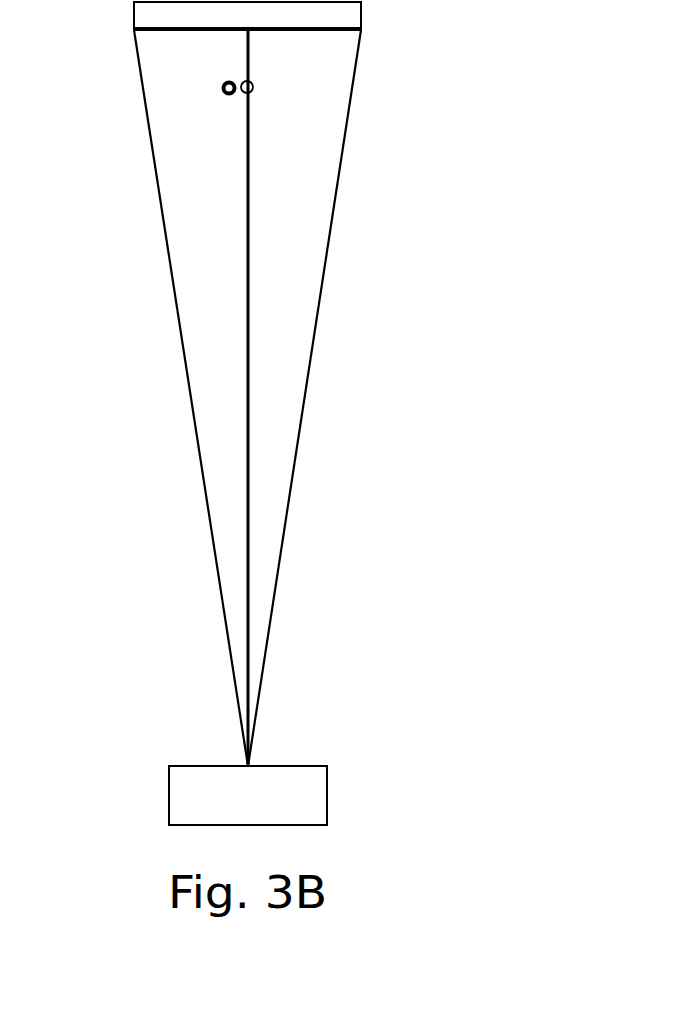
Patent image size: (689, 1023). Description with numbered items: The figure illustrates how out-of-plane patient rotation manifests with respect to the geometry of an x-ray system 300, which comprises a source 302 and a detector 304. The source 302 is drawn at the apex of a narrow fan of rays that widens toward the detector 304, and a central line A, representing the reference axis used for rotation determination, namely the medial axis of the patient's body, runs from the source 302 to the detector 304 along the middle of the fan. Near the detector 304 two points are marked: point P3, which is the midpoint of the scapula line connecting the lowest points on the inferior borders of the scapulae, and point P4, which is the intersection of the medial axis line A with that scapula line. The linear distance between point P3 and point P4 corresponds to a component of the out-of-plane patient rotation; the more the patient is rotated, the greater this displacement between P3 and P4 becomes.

The x-ray system 300 is at (305, 425).
The source 302 is at (327, 793).
The detector 304 is at (362, 14).
The line A is at (250, 224).
The point P3 is at (223, 87).
The point P4 is at (253, 86).